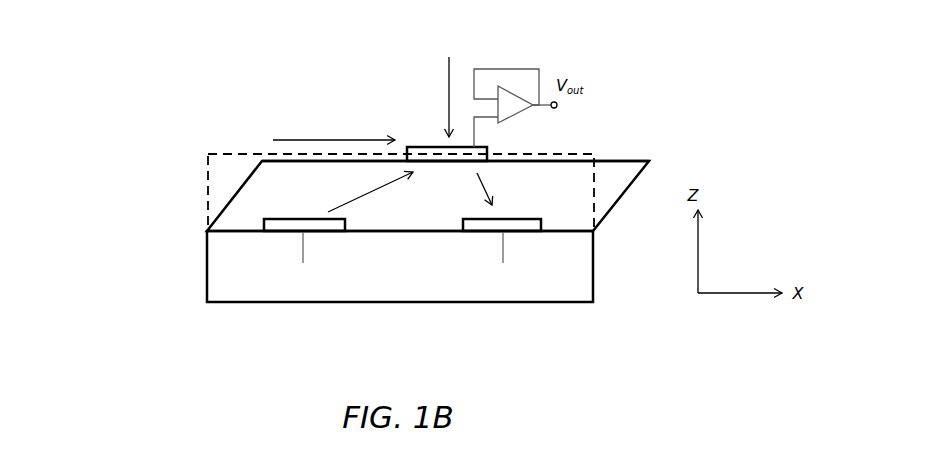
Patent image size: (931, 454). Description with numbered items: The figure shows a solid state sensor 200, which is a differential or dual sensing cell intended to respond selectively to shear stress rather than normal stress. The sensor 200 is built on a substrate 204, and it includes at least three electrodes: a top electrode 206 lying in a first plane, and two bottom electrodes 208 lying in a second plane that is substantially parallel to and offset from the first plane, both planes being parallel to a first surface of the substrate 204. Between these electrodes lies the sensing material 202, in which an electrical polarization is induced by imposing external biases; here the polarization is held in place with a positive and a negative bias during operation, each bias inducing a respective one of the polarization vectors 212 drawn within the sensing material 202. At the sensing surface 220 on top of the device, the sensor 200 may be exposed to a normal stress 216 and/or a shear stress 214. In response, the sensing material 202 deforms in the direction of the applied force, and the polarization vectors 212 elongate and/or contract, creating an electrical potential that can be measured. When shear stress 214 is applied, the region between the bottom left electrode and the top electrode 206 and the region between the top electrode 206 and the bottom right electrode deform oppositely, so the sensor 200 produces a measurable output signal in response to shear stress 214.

The solid state sensor 200 is at (643, 73).
The sensing material 202 is at (253, 202).
The substrate 204 is at (253, 275).
The top electrode 206 is at (432, 152).
The bottom electrodes 208 is at (333, 225).
The polarization vectors 212 is at (470, 192).
The shear stress 214 is at (327, 135).
The normal stress 216 is at (448, 73).
The sensing surface 220 is at (623, 162).